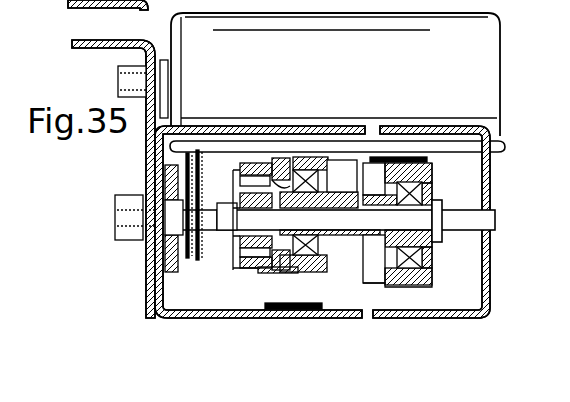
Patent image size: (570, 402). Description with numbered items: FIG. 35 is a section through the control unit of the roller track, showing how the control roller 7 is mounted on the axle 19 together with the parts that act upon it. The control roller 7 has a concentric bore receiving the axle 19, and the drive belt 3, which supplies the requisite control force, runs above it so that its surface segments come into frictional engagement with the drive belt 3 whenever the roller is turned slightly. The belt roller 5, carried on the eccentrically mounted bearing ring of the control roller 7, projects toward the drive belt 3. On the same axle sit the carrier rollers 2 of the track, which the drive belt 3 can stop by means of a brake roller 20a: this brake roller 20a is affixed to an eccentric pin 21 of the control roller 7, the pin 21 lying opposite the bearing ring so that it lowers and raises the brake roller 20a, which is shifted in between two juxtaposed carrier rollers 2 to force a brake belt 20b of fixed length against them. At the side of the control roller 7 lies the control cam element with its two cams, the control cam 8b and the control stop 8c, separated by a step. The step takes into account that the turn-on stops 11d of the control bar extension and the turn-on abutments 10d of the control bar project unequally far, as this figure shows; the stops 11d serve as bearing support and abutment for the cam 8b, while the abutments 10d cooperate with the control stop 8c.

The carrier rollers 2 is at (500, 102).
The drive belt 3 is at (319, 160).
The belt roller 5 is at (290, 163).
The control roller 7 is at (267, 163).
The control cam 8b is at (210, 203).
The control stop 8c is at (223, 235).
The turn-on abutments 10d is at (147, 246).
The turn-on stops 11d is at (185, 208).
The axle 19 is at (483, 215).
The brake roller 20a is at (432, 162).
The brake belt 20b is at (403, 157).
The eccentric pin 21 is at (351, 208).